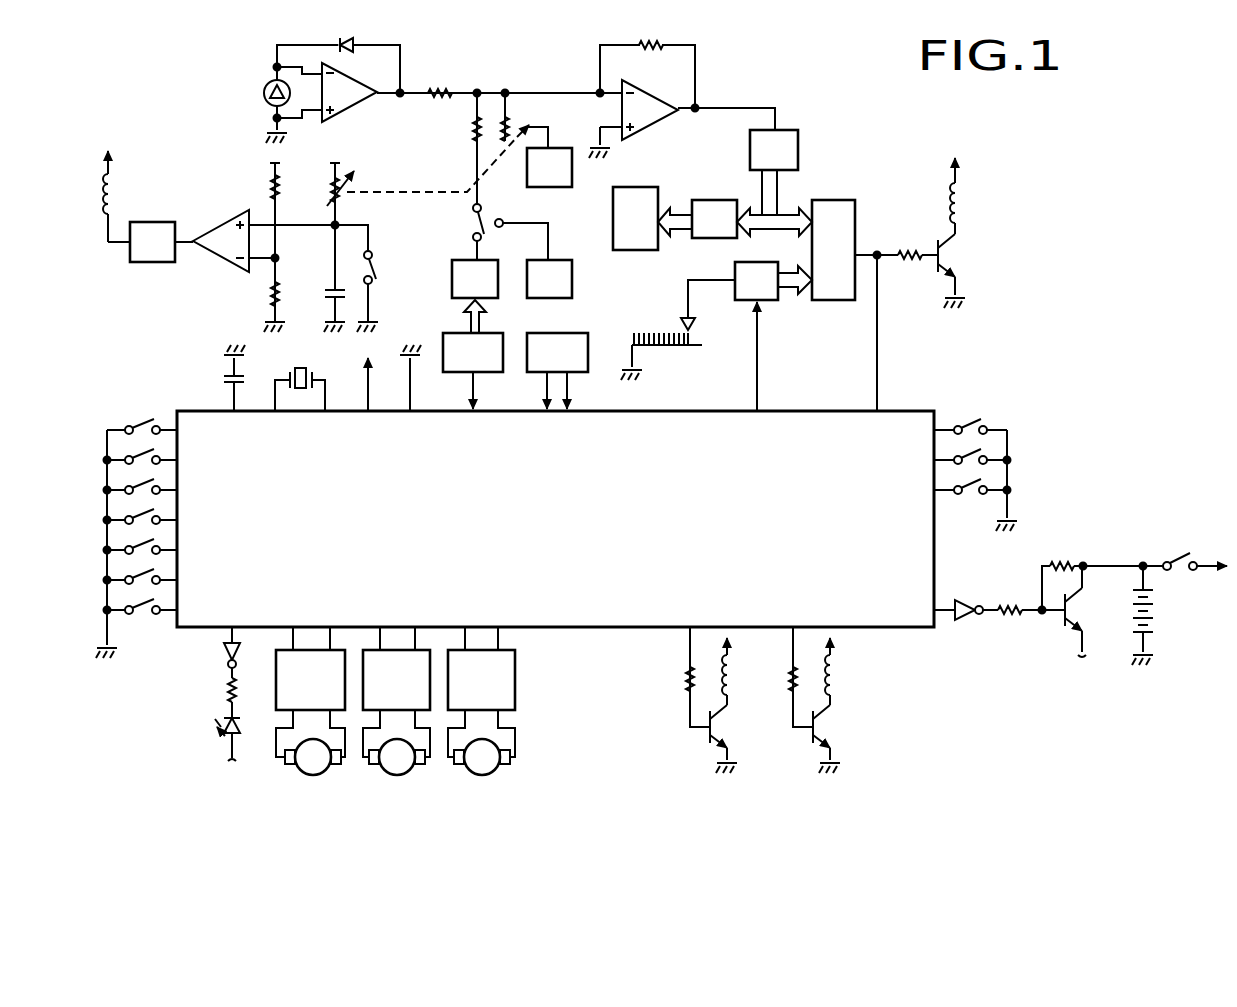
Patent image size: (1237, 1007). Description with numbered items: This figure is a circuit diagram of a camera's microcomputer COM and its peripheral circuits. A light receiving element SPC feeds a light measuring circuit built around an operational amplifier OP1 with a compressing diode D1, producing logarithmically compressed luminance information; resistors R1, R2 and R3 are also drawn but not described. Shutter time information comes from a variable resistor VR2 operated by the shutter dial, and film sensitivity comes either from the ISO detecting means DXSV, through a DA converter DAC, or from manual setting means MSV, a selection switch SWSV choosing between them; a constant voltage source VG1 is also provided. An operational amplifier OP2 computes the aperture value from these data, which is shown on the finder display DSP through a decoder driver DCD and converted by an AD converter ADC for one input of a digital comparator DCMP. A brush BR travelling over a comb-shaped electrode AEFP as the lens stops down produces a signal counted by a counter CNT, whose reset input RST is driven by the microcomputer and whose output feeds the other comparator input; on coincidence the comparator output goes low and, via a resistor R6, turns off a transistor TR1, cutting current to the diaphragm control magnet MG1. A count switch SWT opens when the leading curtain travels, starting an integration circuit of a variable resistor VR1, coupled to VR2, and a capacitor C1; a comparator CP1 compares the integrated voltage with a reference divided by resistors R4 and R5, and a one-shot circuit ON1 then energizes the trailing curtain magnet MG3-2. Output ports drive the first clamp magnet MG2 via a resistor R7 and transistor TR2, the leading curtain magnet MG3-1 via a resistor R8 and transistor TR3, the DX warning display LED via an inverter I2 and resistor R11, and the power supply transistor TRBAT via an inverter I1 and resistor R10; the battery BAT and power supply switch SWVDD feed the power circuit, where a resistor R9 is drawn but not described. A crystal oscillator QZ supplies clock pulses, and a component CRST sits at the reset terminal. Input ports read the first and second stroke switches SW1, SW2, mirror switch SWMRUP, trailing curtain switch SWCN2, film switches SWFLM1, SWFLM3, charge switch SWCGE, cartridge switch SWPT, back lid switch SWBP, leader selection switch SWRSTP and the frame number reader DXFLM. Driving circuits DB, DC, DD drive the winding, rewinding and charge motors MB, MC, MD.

The light receiving element SPC is at (264, 94).
The operational amplifier OP1 is at (461, 92).
The compressing diode D1 is at (350, 50).
The resistor R1 is at (442, 91).
The resistor R2 is at (654, 50).
The resistor R3 is at (471, 135).
The variable resistor VR2 is at (512, 120).
The constant voltage source VG1 is at (549, 167).
The operational amplifier OP2 is at (682, 119).
The AD converter ADC is at (774, 172).
The display device DSP is at (652, 218).
The decoder driver DCD is at (752, 219).
The digital comparator DCMP is at (855, 305).
The counter CNT is at (773, 336).
The reset terminal RST is at (776, 327).
The brush BR is at (683, 317).
The comb-shaped electrode AEFP is at (662, 354).
The resistor R6 is at (908, 247).
The transistor TR1 is at (956, 258).
The diaphragm control magnet MG1 is at (968, 214).
The trailing shutter curtain magnet MG3-2 is at (112, 192).
The one-shot circuit ON1 is at (161, 242).
The comparator CP1 is at (280, 241).
The resistor R4 is at (269, 187).
The resistor R5 is at (269, 296).
The variable resistor VR1 is at (328, 178).
The capacitor C1 is at (325, 293).
The count switch SWT is at (376, 267).
The selection switch SWSV is at (471, 222).
The DA converter DAC is at (475, 296).
The manual film sensitivity value setting means MSV is at (549, 279).
The ISO film sensitivity value detecting means DXSV is at (487, 371).
The film frame number reading device DXFLM is at (557, 371).
The microcomputer COM is at (555, 519).
The reset capacitor CRST is at (222, 381).
The crystal oscillator QZ is at (299, 366).
The first stroke switch SW1 is at (125, 538).
The second stroke switch SW2 is at (125, 460).
The mirror switch SWMRUP is at (110, 490).
The trailing shutter curtain switch SWCN2 is at (115, 520).
The first film switch SWFLM1 is at (112, 550).
The third film switch SWFLM3 is at (112, 580).
The charge switch SWCGE is at (114, 610).
The film cartridge presence/absence switch SWPT is at (992, 474).
The camera back lid opening/closing switch SWBP is at (992, 460).
The leader part selection switch SWRSTP is at (1001, 490).
The inverter I2 is at (220, 660).
The resistor R11 is at (224, 696).
The warning display device LED is at (220, 733).
The driving circuit DB is at (310, 668).
The driving circuit DC is at (396, 668).
The driving circuit DD is at (481, 668).
The film winding motor MB is at (310, 742).
The film rewinding motor MC is at (396, 742).
The charge motor MD is at (481, 742).
The resistor R8 is at (682, 677).
The transistor TR3 is at (731, 736).
The leading shutter curtain magnet MG3-1 is at (735, 675).
The resistor R7 is at (784, 685).
The transistor TR2 is at (835, 736).
The first clamp magnet MG2 is at (838, 691).
The inverter I1 is at (960, 601).
The resistor R10 is at (1031, 597).
The resistor R9 is at (1049, 564).
The power supply transistor TRBAT is at (1078, 620).
The power supply battery BAT is at (1156, 624).
The power supply switch SWVDD is at (1175, 556).